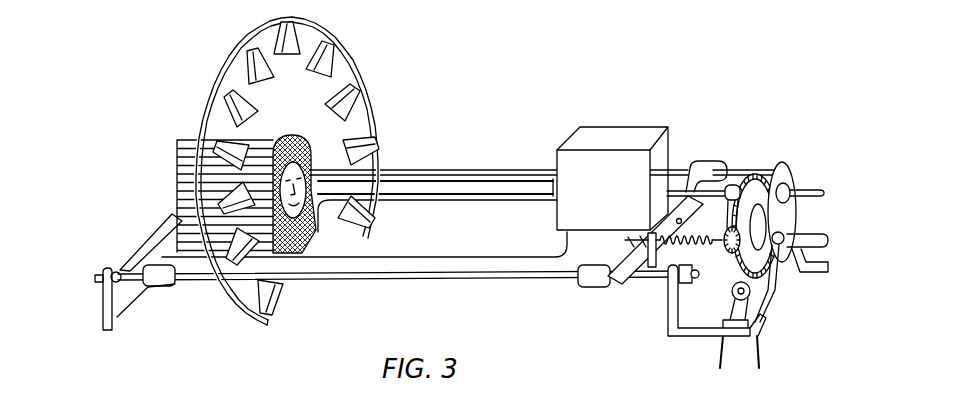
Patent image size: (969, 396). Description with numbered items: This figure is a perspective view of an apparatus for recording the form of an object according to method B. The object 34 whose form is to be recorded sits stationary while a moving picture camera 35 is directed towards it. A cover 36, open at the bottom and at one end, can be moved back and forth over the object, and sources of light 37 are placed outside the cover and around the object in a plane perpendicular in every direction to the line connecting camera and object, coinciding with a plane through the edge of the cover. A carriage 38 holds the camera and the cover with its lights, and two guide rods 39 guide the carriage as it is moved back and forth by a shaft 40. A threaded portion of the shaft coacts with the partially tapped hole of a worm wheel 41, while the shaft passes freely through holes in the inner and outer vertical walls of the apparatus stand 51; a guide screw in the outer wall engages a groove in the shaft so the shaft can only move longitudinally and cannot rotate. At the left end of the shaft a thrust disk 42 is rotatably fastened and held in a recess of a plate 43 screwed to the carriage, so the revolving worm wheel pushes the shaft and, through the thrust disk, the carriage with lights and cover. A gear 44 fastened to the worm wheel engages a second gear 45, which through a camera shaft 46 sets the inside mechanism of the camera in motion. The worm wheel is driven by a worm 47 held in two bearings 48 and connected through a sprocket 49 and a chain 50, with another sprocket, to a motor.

The object 34 is at (303, 163).
The moving picture camera 35 is at (604, 128).
The cover 36 is at (190, 157).
The sources of light 37 is at (367, 216).
The carriage 38 is at (447, 185).
The guide rods 39 is at (517, 168).
The shaft 40 is at (699, 231).
The worm wheel 41 is at (733, 265).
The thrust disk 42 is at (648, 255).
The plate 43 is at (678, 217).
The gear 44 is at (790, 175).
The second gear 45 is at (771, 210).
The camera shaft 46 is at (809, 188).
The worm 47 is at (745, 289).
The bearings 48 is at (798, 266).
The sprocket 49 is at (728, 296).
The chain 50 is at (763, 355).
The apparatus stand 51 is at (665, 360).